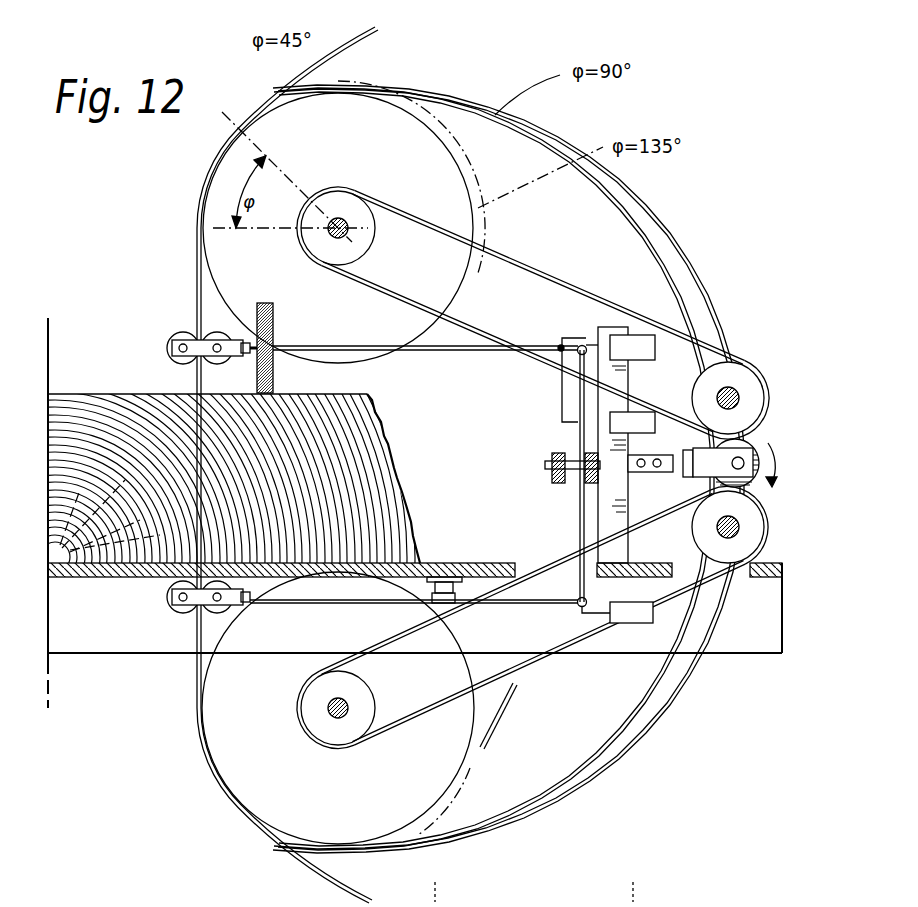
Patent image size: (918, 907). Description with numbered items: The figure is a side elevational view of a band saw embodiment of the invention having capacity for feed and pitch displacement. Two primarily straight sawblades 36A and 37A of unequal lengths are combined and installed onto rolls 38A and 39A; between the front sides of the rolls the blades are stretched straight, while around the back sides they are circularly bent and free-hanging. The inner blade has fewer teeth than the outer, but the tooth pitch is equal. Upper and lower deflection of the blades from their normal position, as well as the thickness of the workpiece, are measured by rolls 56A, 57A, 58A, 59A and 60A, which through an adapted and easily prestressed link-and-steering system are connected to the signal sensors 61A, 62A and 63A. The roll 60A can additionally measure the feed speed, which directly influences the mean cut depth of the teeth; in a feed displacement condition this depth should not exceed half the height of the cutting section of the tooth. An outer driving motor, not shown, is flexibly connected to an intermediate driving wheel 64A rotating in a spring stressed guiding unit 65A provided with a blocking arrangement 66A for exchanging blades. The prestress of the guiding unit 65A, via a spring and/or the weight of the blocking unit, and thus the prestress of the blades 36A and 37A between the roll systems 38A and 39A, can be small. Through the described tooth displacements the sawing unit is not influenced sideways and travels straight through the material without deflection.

The sawblade 36A is at (630, 235).
The sawblade 37A is at (680, 262).
The roll 38A is at (232, 170).
The roll 39A is at (235, 767).
The roll 56A is at (170, 340).
The roll 57A is at (212, 334).
The roll 58A is at (178, 615).
The roll 59A is at (216, 613).
The roll 60A is at (274, 322).
The signal sensor 61A is at (643, 345).
The signal sensor 62A is at (640, 620).
The signal sensor 63A is at (612, 422).
The intermediate driving wheel 64A is at (747, 447).
The spring stressed guiding unit 65A is at (690, 457).
The blocking arrangement 66A is at (657, 463).